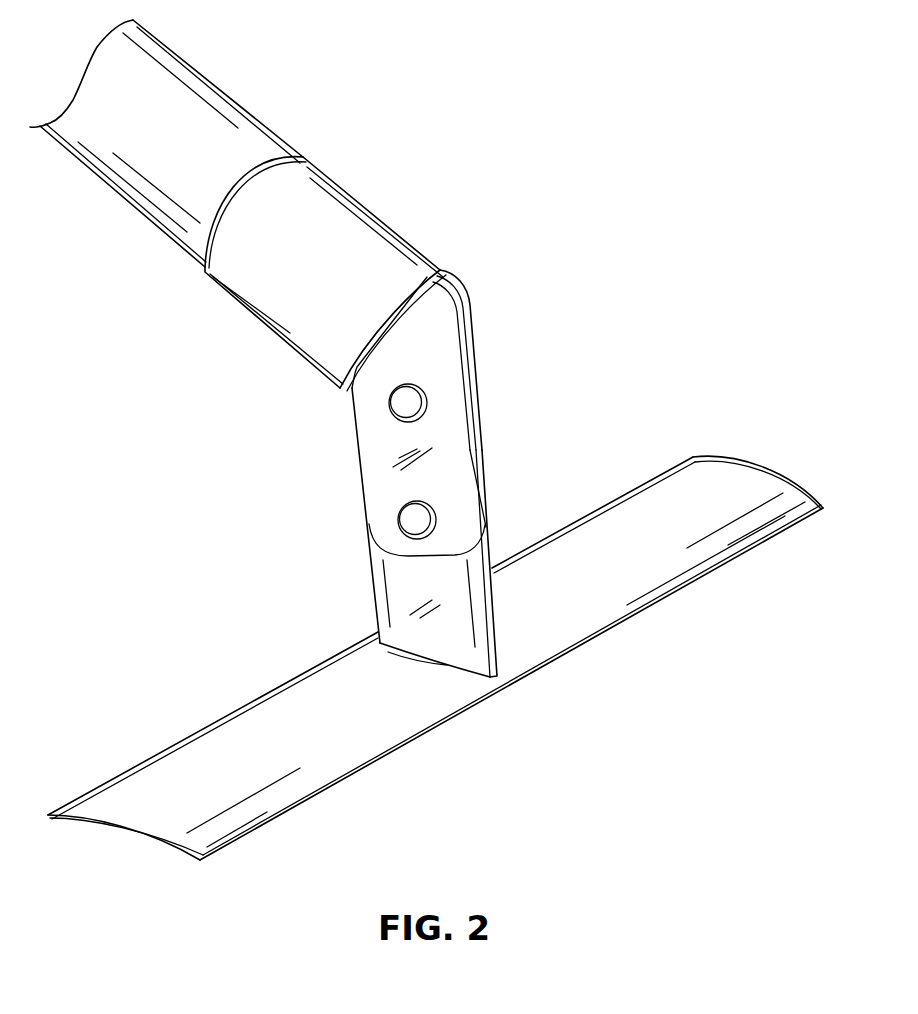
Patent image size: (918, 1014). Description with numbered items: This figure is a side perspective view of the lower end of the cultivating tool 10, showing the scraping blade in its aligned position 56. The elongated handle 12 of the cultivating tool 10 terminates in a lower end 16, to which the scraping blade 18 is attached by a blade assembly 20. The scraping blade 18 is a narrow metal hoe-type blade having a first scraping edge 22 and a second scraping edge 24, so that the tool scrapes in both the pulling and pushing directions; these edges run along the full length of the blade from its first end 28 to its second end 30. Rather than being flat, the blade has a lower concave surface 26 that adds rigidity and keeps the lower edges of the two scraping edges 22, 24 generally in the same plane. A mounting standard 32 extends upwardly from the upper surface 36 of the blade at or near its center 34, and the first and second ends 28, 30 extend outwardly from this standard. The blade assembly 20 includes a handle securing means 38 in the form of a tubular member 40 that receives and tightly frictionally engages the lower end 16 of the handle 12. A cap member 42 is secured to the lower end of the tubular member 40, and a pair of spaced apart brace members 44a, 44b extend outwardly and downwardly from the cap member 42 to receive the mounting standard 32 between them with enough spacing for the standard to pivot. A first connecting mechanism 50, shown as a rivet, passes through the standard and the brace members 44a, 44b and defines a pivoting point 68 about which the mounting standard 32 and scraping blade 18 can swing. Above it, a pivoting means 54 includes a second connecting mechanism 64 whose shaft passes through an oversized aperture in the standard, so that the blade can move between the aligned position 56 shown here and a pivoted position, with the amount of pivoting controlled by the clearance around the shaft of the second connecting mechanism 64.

The cultivating tool 10 is at (592, 295).
The handle 12 is at (133, 70).
The lower end of handle 16 is at (185, 266).
The scraping blade 18 is at (605, 608).
The blade assembly 20 is at (295, 407).
The first scraping edge 22 is at (203, 727).
The second scraping edge 24 is at (330, 788).
The lower concave surface 26 is at (125, 826).
The first end of scraping blade 28 is at (50, 803).
The second end of scraping blade 30 is at (827, 517).
The mounting standard 32 is at (453, 577).
The center of scraping blade 34 is at (513, 697).
The upper surface of scraping blade 36 is at (672, 512).
The handle securing means 38 is at (345, 176).
The tubular member 40 is at (363, 250).
The cap member 42 is at (368, 338).
The first brace member 44a is at (435, 345).
The second brace member 44b is at (482, 428).
The first connecting mechanism 50 is at (400, 528).
The pivoting means 54 is at (382, 443).
The aligned position 56 is at (497, 297).
The second connecting mechanism 64 is at (392, 414).
The pivoting point 68 is at (437, 508).